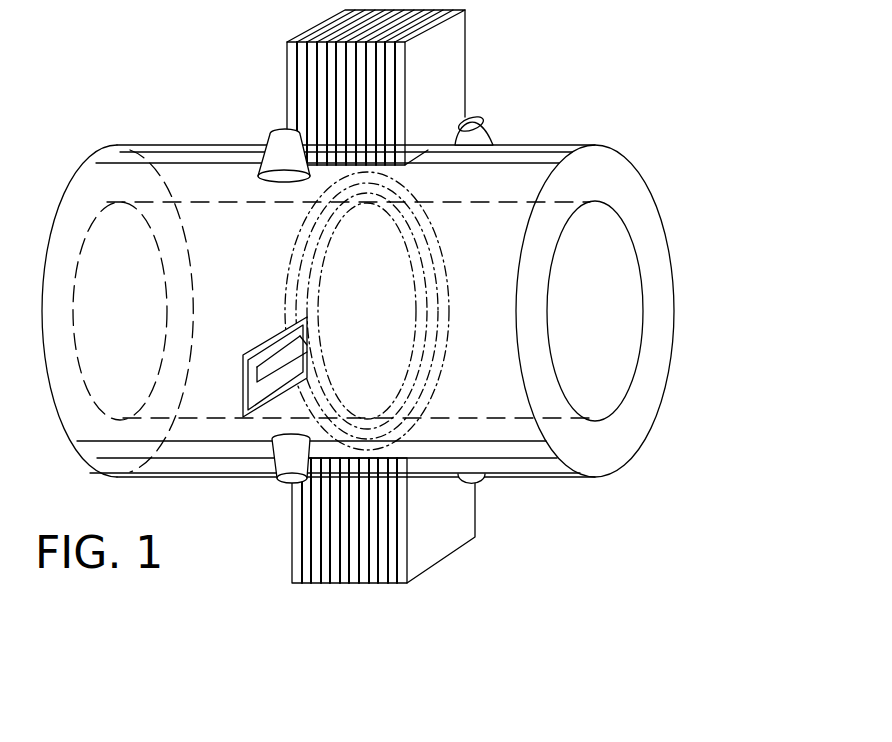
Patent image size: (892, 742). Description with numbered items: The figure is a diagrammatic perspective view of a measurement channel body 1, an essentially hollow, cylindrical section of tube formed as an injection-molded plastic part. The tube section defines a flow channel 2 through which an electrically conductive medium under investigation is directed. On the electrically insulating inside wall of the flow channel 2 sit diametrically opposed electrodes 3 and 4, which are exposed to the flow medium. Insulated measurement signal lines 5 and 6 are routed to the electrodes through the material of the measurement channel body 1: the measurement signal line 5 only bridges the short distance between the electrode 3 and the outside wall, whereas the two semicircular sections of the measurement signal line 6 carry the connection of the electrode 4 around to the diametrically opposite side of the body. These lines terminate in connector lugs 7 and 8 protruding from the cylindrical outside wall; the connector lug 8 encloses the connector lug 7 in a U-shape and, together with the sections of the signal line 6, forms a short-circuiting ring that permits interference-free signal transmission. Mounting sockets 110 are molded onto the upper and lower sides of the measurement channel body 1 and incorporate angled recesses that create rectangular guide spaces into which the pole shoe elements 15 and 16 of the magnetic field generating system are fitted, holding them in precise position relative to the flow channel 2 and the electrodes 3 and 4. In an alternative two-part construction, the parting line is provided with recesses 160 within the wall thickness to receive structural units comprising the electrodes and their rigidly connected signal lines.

The measurement channel body 1 is at (610, 172).
The flow channel 2 is at (598, 310).
The electrode 3 is at (312, 335).
The electrode 4 is at (417, 276).
The measurement signal line 5 is at (305, 350).
The measurement signal line 6 is at (413, 232).
The connector lug 7 is at (273, 362).
The connector lug 8 is at (243, 384).
The pole shoe element 15 is at (458, 53).
The pole shoe element 16 is at (438, 545).
The mounting socket 110 is at (275, 128).
The recess 160 is at (448, 293).